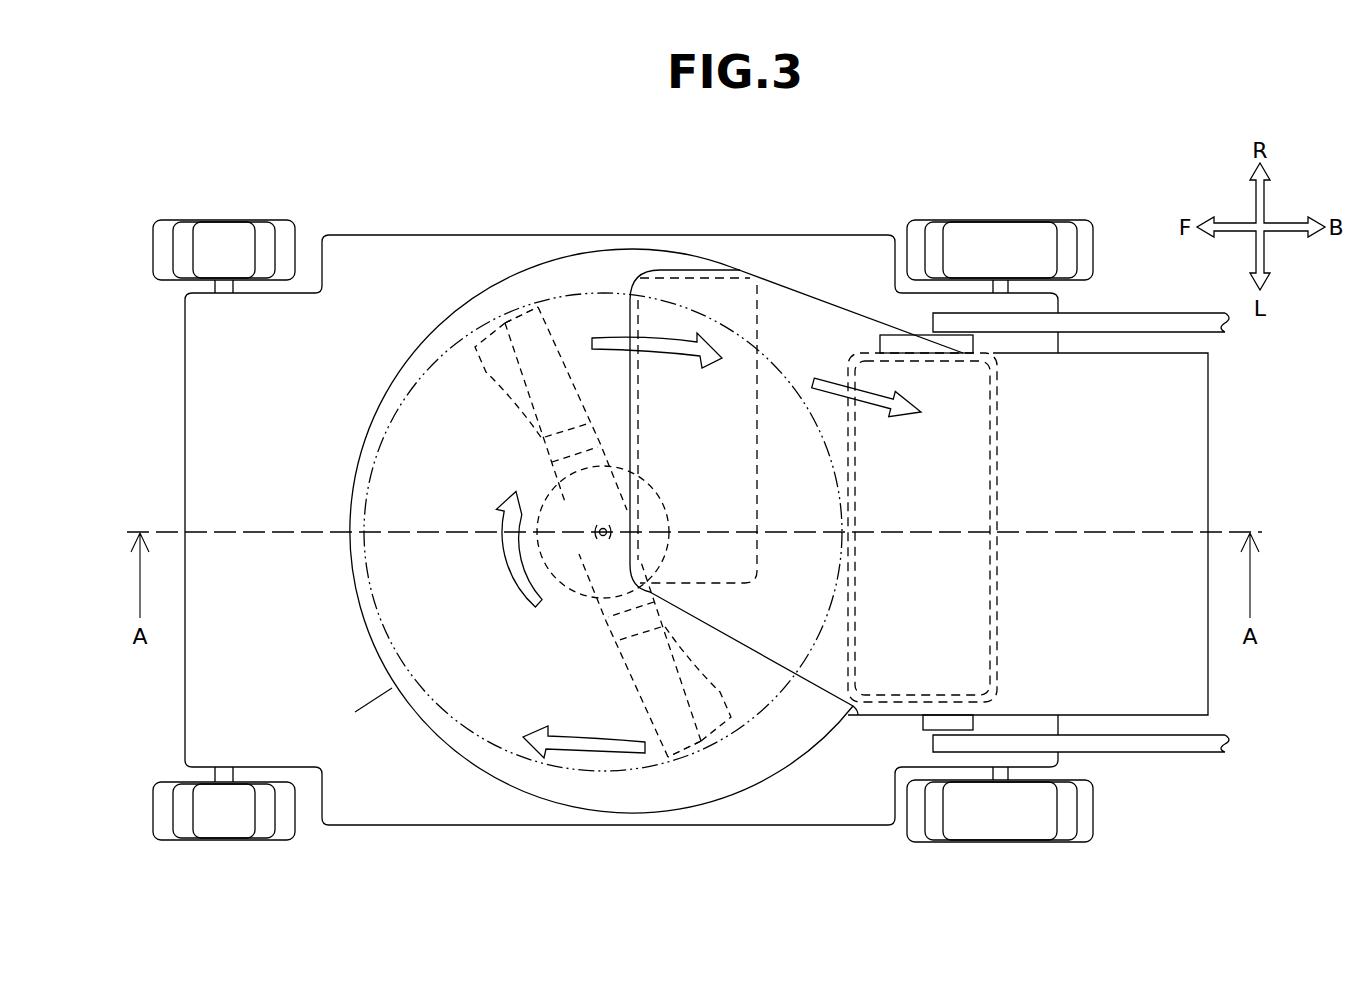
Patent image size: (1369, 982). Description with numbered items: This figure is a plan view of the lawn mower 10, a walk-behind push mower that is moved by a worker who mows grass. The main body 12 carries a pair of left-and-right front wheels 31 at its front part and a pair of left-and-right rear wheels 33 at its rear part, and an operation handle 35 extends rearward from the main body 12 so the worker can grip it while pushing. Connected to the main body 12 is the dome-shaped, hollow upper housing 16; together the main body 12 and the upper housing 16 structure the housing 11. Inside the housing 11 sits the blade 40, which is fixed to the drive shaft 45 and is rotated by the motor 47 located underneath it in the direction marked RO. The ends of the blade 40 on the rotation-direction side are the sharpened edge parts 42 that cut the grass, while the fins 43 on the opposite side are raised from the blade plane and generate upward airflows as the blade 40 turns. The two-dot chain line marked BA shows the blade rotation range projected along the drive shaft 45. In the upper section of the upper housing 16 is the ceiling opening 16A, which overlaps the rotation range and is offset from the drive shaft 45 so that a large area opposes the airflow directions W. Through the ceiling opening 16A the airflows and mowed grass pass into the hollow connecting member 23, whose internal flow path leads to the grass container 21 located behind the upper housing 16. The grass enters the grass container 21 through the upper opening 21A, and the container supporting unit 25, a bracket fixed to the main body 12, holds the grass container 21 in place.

The lawn mower 10 is at (763, 183).
The housing 11 is at (425, 188).
The main body 12 is at (452, 233).
The upper housing 16 is at (513, 272).
The ceiling opening 16A is at (673, 270).
The grass container 21 is at (1046, 451).
The upper opening 21A is at (885, 353).
The connecting member 23 is at (808, 296).
The container supporting unit 25 is at (965, 348).
The front wheels 31 is at (232, 220).
The rear wheels 33 is at (1097, 232).
The operation handle 35 is at (1144, 313).
The blade 40 is at (583, 534).
The edge parts 42 is at (548, 306).
The fins 43 is at (487, 370).
The drive shaft 45 is at (558, 500).
The motor 47 is at (577, 600).